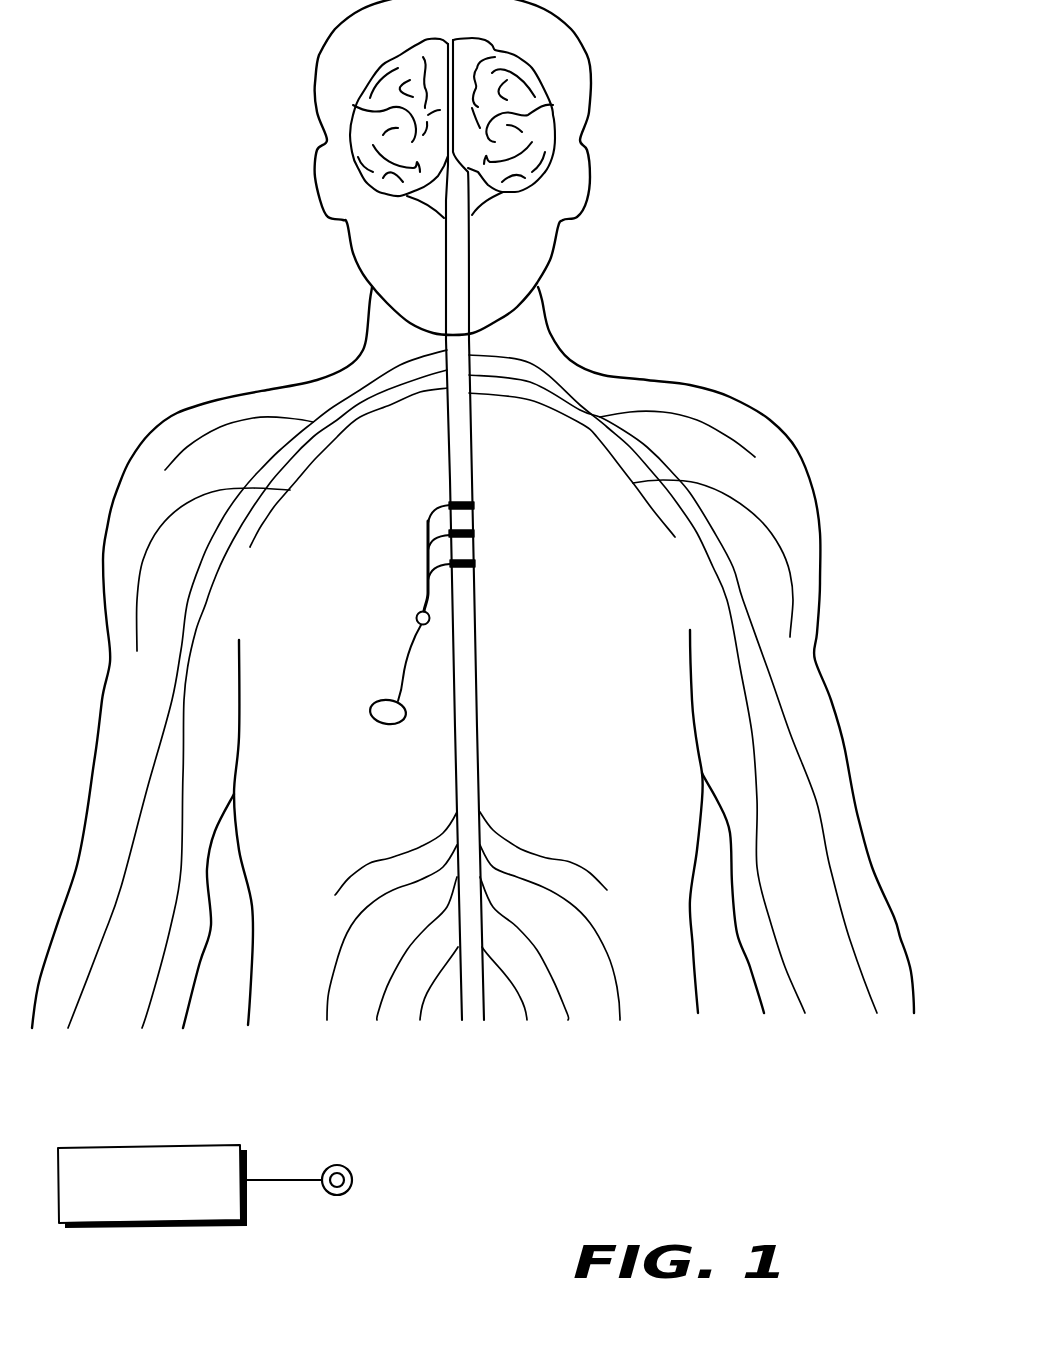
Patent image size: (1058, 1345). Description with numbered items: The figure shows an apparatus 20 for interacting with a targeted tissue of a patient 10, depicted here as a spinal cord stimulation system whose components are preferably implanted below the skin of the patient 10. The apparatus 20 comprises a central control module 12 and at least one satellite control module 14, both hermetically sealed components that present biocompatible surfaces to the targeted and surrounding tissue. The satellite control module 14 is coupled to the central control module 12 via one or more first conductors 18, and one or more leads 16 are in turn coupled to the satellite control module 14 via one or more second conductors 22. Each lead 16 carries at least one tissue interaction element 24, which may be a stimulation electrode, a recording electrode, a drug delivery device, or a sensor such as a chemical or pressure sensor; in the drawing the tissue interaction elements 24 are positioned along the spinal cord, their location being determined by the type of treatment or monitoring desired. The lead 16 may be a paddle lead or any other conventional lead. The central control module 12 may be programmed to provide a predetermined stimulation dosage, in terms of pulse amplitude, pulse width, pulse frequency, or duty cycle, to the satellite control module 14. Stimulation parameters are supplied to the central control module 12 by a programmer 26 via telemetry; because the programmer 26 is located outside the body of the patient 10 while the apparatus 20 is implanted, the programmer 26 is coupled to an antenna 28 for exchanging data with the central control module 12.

The patient 10 is at (680, 384).
The central control module 12 is at (378, 723).
The satellite control module 14 is at (416, 618).
The lead 16 is at (428, 524).
The first conductors 18 is at (401, 665).
The apparatus 20 is at (307, 746).
The second conductors 22 is at (428, 589).
The tissue interaction element 24 is at (474, 505).
The programmer 26 is at (147, 1227).
The antenna 28 is at (338, 1197).